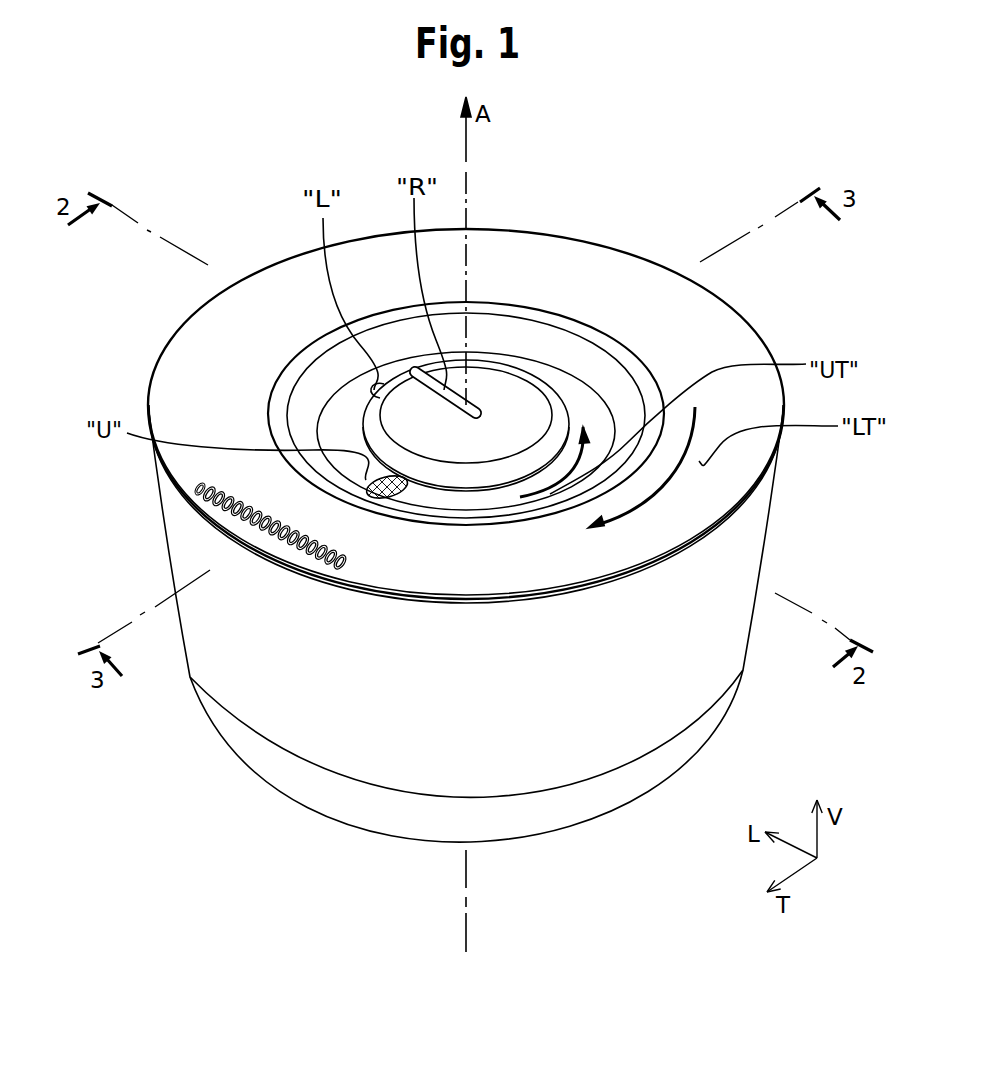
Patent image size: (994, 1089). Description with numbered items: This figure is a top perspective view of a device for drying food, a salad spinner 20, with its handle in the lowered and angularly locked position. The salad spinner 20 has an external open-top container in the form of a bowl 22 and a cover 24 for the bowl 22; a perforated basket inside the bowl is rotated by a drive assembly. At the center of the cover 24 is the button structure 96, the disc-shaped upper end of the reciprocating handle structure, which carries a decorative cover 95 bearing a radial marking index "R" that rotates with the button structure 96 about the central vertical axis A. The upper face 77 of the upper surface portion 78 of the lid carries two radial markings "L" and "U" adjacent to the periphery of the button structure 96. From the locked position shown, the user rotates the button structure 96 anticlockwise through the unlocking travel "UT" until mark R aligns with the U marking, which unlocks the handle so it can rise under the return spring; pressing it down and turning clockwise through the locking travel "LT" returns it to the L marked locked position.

The salad spinner 20 is at (502, 506).
The bowl 22 is at (778, 567).
The cover 24 is at (716, 334).
The upper face 77 is at (347, 422).
The upper surface portion 78 is at (586, 398).
The decorative cover 95 is at (502, 393).
The button structure 96 is at (553, 372).